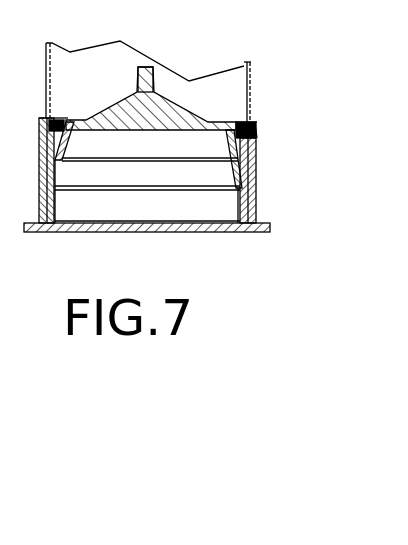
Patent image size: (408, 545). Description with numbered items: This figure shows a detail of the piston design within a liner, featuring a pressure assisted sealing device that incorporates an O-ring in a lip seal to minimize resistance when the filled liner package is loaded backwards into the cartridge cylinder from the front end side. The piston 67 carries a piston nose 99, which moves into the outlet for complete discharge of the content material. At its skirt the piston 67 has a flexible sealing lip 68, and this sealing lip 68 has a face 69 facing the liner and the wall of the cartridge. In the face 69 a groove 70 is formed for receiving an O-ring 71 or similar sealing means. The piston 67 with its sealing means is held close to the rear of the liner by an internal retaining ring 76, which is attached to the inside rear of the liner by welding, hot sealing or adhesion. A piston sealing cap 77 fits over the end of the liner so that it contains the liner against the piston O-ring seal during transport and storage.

The piston 67 is at (91, 96).
The piston nose 99 is at (148, 70).
The flexible sealing lip 68 is at (236, 120).
The groove 70 is at (236, 121).
The face 69 is at (250, 118).
The O-ring 71 is at (254, 128).
The internal retaining ring 76 is at (242, 233).
The piston sealing cap 77 is at (36, 232).